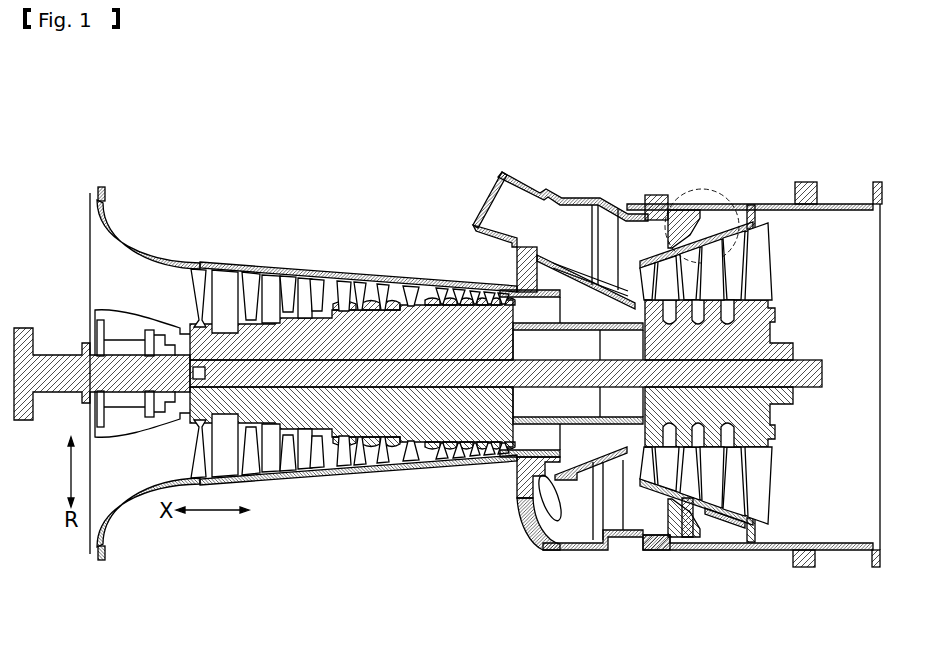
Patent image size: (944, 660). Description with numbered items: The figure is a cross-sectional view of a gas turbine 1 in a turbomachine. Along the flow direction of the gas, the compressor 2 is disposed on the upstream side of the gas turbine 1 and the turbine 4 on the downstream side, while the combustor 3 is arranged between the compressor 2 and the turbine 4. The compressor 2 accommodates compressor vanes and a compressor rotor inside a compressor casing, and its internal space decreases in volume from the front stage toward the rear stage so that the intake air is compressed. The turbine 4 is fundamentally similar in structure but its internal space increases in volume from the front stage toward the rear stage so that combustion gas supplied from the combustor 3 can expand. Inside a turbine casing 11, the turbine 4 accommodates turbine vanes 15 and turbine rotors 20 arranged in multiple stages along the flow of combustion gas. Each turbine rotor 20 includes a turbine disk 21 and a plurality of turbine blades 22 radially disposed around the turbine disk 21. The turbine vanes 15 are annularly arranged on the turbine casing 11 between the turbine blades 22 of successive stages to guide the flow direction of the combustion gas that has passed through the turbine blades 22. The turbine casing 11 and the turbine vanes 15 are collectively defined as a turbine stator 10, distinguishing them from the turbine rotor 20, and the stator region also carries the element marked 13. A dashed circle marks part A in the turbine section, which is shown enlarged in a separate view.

The gas turbine 1 is at (172, 140).
The compressor 2 is at (225, 260).
The combustor 3 is at (516, 175).
The turbine 4 is at (712, 373).
The turbine stator 10 is at (708, 570).
The turbine casing 11 is at (686, 540).
The vane carrier 13 is at (700, 505).
The turbine vanes 15 is at (735, 500).
The turbine rotor 20 is at (750, 314).
The turbine disk 21 is at (780, 337).
The turbine blades 22 is at (755, 257).
The part A is at (687, 188).